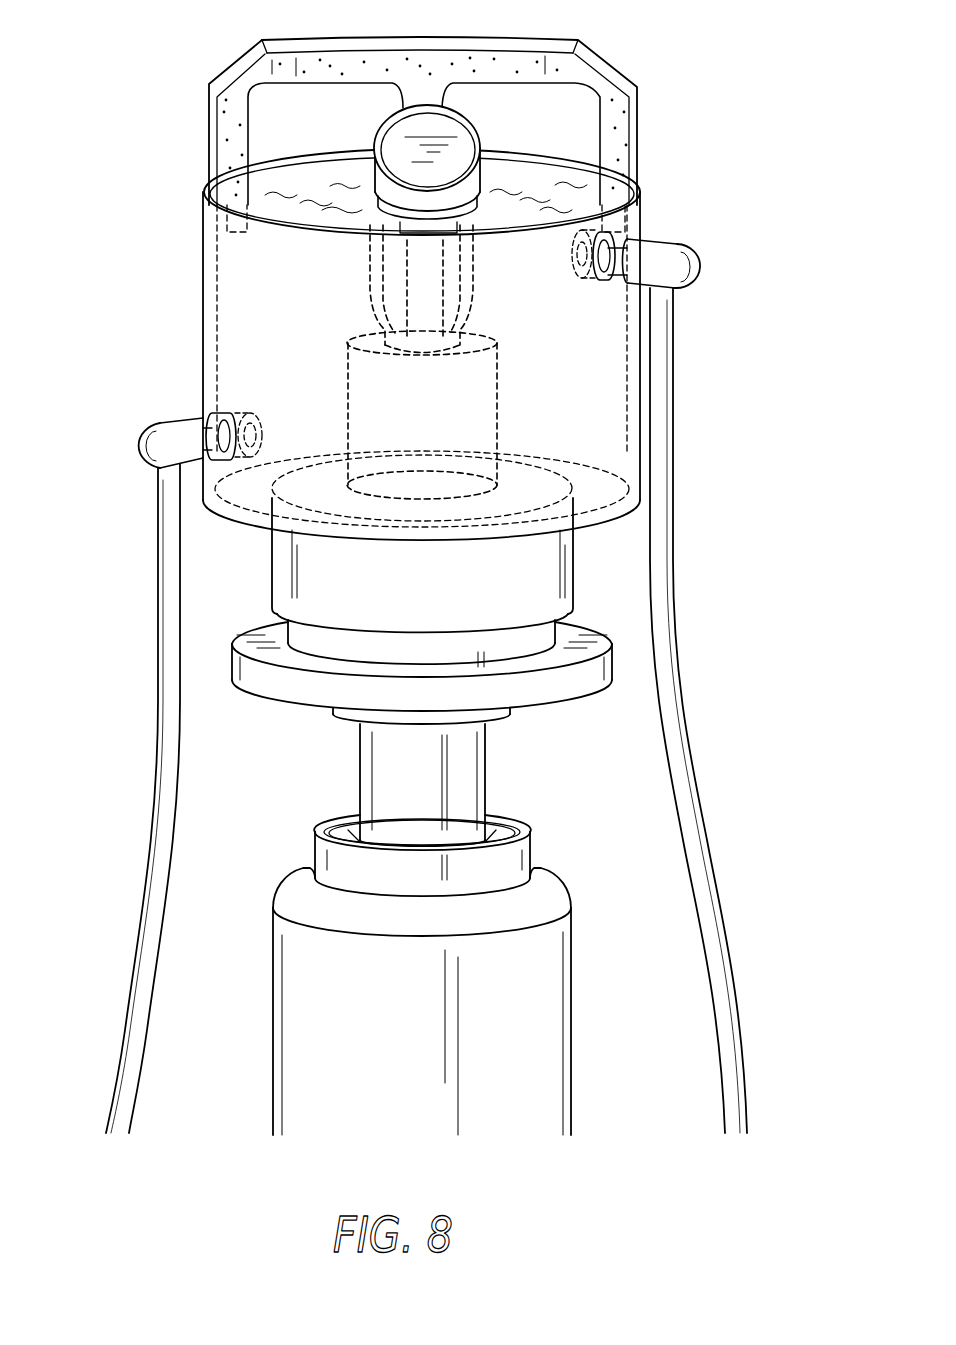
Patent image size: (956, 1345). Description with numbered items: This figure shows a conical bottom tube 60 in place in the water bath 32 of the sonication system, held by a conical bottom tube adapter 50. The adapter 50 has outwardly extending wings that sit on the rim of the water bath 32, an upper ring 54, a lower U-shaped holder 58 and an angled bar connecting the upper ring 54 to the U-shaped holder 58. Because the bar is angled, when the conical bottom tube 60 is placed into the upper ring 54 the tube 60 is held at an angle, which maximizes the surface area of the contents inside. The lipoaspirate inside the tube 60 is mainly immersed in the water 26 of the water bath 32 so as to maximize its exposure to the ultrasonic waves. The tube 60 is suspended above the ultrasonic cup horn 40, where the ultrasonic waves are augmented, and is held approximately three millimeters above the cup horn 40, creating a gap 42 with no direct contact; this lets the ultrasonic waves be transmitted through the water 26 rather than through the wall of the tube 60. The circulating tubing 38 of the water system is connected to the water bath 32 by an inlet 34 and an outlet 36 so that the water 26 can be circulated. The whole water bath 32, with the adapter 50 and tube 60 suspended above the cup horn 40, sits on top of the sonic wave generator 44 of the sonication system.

The water 26 is at (298, 380).
The water bath 32 is at (602, 333).
The inlet 34 is at (205, 418).
The outlet 36 is at (700, 266).
The circulating tubing 38 is at (160, 792).
The ultrasonic cup horn 40 is at (492, 385).
The gap 42 is at (328, 314).
The sonic wave generator 44 is at (547, 997).
The conical bottom tube adapter 50 is at (620, 120).
The upper ring 54 is at (482, 200).
The U-shaped holder 58 is at (476, 316).
The conical bottom tube 60 is at (452, 123).